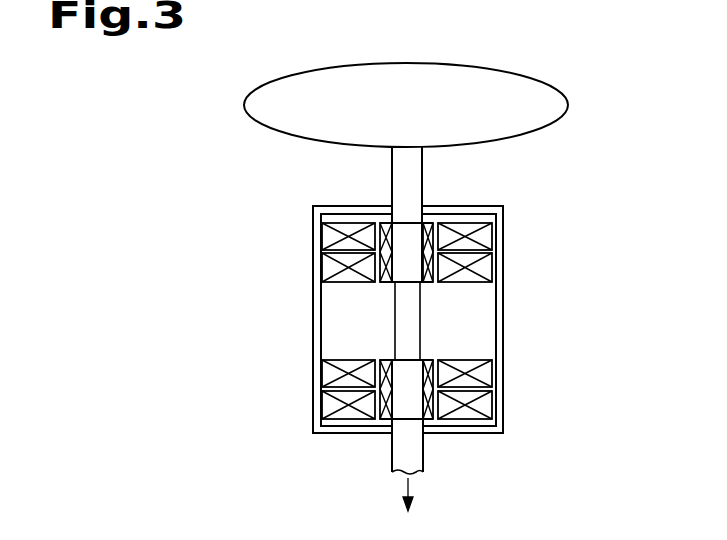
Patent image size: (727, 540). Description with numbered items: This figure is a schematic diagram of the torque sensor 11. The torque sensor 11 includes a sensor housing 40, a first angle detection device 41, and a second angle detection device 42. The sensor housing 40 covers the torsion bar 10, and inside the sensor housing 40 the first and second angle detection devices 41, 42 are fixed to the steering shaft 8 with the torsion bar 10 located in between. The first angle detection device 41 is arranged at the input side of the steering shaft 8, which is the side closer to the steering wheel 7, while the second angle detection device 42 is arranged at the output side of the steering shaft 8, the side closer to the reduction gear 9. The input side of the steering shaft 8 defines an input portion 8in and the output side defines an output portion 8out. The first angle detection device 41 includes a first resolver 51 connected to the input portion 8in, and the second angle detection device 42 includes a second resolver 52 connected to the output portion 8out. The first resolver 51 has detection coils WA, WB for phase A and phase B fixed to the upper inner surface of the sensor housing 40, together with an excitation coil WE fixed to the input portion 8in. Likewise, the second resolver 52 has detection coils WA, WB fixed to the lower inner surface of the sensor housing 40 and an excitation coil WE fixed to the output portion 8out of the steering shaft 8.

The steering wheel 7 is at (531, 78).
The steering shaft 8 is at (423, 175).
The input portion 8in is at (408, 276).
The output portion 8out is at (408, 368).
The torsion bar 10 is at (421, 327).
The torque sensor 11 is at (509, 231).
The sensor housing 40 is at (504, 318).
The first angle detection device 41 is at (318, 223).
The second angle detection device 42 is at (318, 419).
The first resolver 51 is at (256, 231).
The second resolver 52 is at (256, 330).
The detection coil WA is at (328, 234).
The detection coil WB is at (329, 269).
The excitation coil WE is at (386, 282).
The reduction gear 9 is at (410, 509).